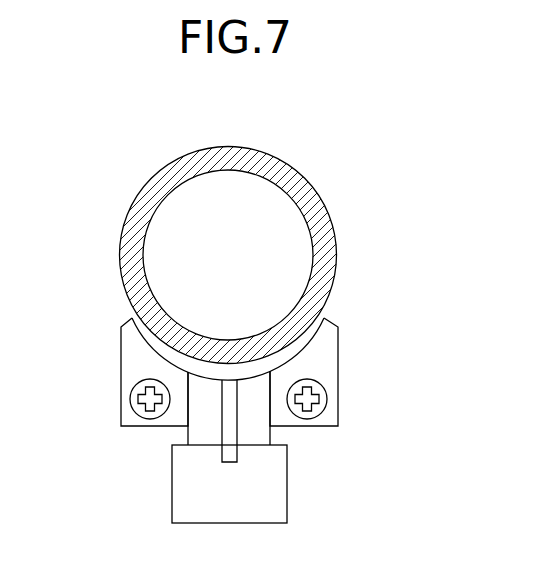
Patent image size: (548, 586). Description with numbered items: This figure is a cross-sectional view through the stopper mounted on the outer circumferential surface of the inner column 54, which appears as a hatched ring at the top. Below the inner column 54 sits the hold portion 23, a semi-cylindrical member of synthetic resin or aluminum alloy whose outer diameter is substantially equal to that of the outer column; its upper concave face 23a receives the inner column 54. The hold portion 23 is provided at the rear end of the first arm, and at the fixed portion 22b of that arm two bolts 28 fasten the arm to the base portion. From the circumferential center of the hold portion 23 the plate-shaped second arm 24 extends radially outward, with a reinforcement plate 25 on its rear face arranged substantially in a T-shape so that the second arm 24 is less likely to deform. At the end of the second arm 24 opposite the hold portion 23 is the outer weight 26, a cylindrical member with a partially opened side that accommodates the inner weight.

The inner column 54 is at (275, 157).
The hold portion 23 is at (270, 352).
The arc-shaped receiving surface 23a is at (310, 342).
The fixed portion 22b is at (327, 367).
The second arm 24 is at (263, 433).
The reinforcement plate 25 is at (235, 452).
The outer weight 26 is at (248, 513).
The bolt 28 is at (133, 407).